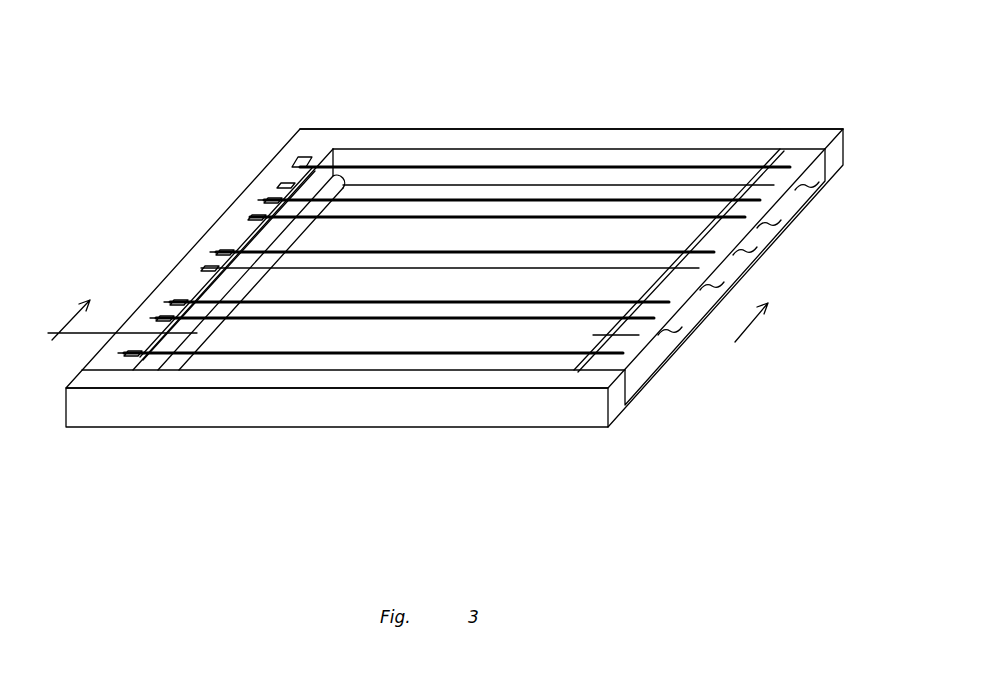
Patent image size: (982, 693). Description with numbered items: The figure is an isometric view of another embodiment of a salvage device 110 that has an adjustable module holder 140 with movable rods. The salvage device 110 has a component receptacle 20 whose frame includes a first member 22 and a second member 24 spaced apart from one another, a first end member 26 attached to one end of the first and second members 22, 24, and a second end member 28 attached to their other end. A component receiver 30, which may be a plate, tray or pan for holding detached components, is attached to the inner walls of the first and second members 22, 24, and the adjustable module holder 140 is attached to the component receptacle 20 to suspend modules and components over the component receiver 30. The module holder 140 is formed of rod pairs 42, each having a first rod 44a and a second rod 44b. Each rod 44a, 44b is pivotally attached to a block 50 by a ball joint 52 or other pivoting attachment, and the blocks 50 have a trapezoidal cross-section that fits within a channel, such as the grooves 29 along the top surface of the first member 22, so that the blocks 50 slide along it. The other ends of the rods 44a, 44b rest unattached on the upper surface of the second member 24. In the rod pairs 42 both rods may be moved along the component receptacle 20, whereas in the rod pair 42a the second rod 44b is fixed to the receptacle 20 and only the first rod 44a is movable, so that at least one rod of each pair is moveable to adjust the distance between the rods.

The salvage device 110 is at (457, 244).
The component receptacle 20 is at (454, 265).
The first member 22 is at (194, 274).
The second member 24 is at (643, 388).
The first end member 26 is at (492, 413).
The second end member 28 is at (565, 128).
The grooves 29 is at (270, 186).
The component receiver 30 is at (424, 244).
The adjustable module holder 140 is at (474, 230).
The rod pair 42 is at (728, 276).
The rod pair 42a is at (800, 188).
The first rod 44a is at (518, 252).
The second rod 44b is at (462, 167).
The block 50 is at (205, 268).
The ball joint 52 is at (262, 203).